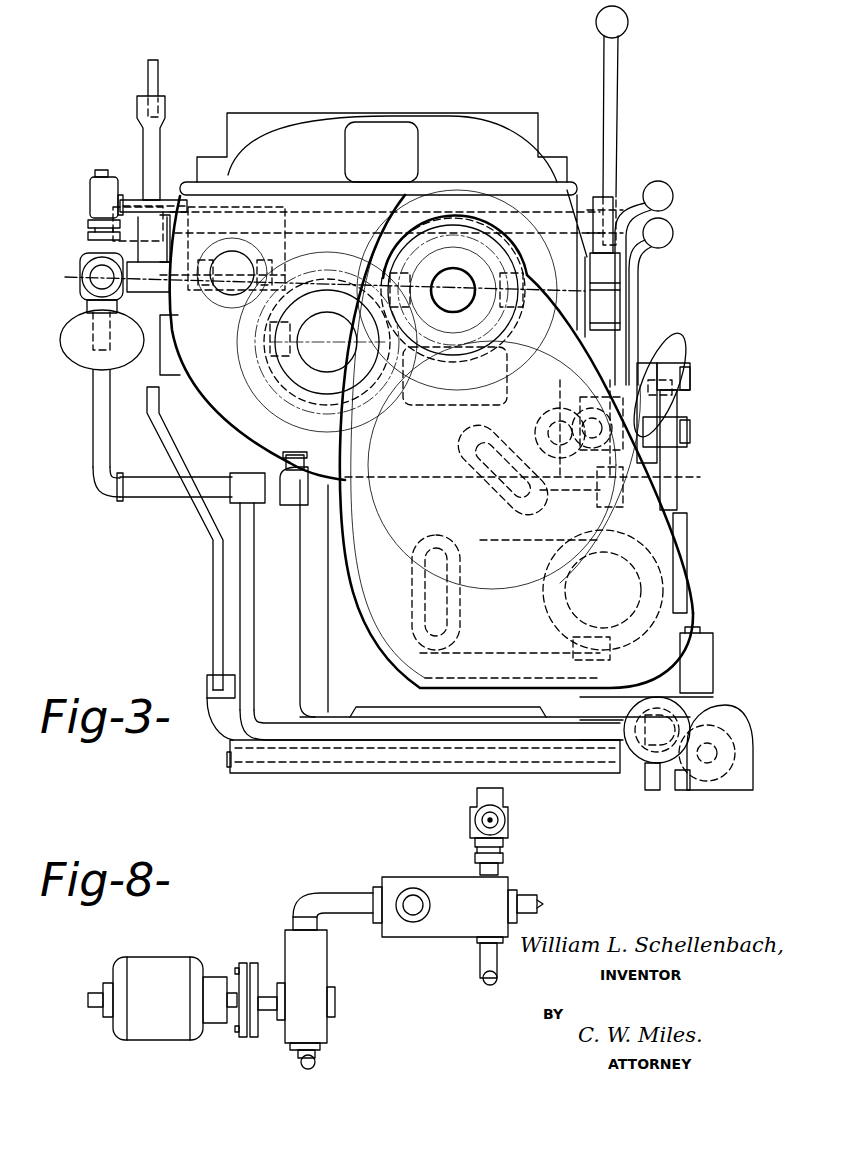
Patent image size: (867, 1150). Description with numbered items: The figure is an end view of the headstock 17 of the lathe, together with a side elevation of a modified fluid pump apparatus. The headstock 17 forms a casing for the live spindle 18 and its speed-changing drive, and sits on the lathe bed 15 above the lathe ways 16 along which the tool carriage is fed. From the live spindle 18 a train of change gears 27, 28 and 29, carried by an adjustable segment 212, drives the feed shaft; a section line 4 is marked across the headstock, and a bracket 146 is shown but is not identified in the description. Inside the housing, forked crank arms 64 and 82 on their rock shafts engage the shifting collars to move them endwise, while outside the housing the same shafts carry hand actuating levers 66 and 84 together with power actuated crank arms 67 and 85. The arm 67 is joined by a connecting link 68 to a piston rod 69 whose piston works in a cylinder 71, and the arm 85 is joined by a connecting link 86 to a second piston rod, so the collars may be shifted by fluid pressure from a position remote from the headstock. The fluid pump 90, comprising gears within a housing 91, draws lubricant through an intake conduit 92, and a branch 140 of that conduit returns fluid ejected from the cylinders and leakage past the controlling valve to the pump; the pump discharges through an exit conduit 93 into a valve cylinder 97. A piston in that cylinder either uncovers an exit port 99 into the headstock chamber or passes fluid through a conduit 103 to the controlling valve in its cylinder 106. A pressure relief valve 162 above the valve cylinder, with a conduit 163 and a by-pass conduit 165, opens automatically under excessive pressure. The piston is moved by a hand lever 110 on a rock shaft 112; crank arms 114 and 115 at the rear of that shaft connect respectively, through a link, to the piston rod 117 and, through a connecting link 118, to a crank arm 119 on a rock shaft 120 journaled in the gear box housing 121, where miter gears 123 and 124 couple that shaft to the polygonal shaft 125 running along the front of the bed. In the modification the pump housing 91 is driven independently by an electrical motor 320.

In FIG. 3, the hand lever 110 is at (617, 91).
In FIG. 3, the crank arm 115 is at (140, 147).
In FIG. 3, the rock shaft 112 is at (330, 198).
In FIG. 3, the headstock 17 is at (228, 410).
In FIG. 3, the forked crank arm 64 is at (270, 383).
In FIG. 3, the live spindle 18 is at (447, 303).
In FIG. 3, the bearing bracket 146 is at (285, 246).
In FIG. 3, the section line 4- 4 is at (311, 283).
In FIG. 3, the pressure relief valve 162 is at (93, 196).
In FIG. 8, the pressure relief valve 162 is at (507, 800).
In FIG. 3, the conduit 163 is at (88, 228).
In FIG. 8, the conduit 163 is at (503, 853).
In FIG. 3, the by-pass conduit 165 is at (150, 205).
In FIG. 8, the by-pass conduit 165 is at (503, 820).
In FIG. 3, the crank arm 114 is at (128, 243).
In FIG. 3, the valve cylinder 97 is at (84, 285).
In FIG. 8, the valve cylinder 97 is at (397, 875).
In FIG. 3, the exit port 99 is at (140, 290).
In FIG. 8, the exit port 99 is at (412, 913).
In FIG. 3, the exit conduit 93 is at (87, 307).
In FIG. 3, the fluid pump 90 is at (62, 348).
In FIG. 3, the pump housing 91 is at (80, 362).
In FIG. 8, the pump housing 91 is at (293, 957).
In FIG. 3, the intake conduit 92 is at (150, 478).
In FIG. 8, the intake conduit 92 is at (320, 1057).
In FIG. 3, the lathe ways 16 is at (367, 475).
In FIG. 3, the forked crank arm 82 is at (508, 360).
In FIG. 3, the change gear 27 is at (433, 350).
In FIG. 3, the change gear 28 is at (392, 530).
In FIG. 3, the adjustable segment 212 is at (515, 540).
In FIG. 3, the change gear 29 is at (540, 615).
In FIG. 3, the piston rod 69 is at (680, 580).
In FIG. 3, the power actuated crank arm 85 is at (642, 362).
In FIG. 3, the connecting link 86 is at (672, 407).
In FIG. 3, the power actuated crank arm 67 is at (653, 450).
In FIG. 3, the connecting link 68 is at (670, 480).
In FIG. 3, the hand actuating lever 84 is at (674, 200).
In FIG. 3, the hand actuating lever 66 is at (674, 240).
In FIG. 3, the lathe bed 15 is at (326, 575).
In FIG. 3, the connecting link 118 is at (212, 583).
In FIG. 3, the crank arm 119 is at (214, 728).
In FIG. 3, the branch conduit 140 is at (392, 740).
In FIG. 3, the rock shaft 120 is at (447, 750).
In FIG. 3, the cylinder 71 is at (715, 668).
In FIG. 3, the valve cylinder 106 is at (650, 738).
In FIG. 3, the conduit 103 is at (650, 790).
In FIG. 8, the conduit 103 is at (480, 960).
In FIG. 3, the gear box housing 121 is at (753, 765).
In FIG. 3, the polygonal shaft 125 is at (715, 752).
In FIG. 3, the miter gear 124 is at (730, 780).
In FIG. 3, the miter gear 123 is at (690, 780).
In FIG. 8, the electrical motor 320 is at (153, 956).
In FIG. 8, the piston rod 117 is at (527, 895).